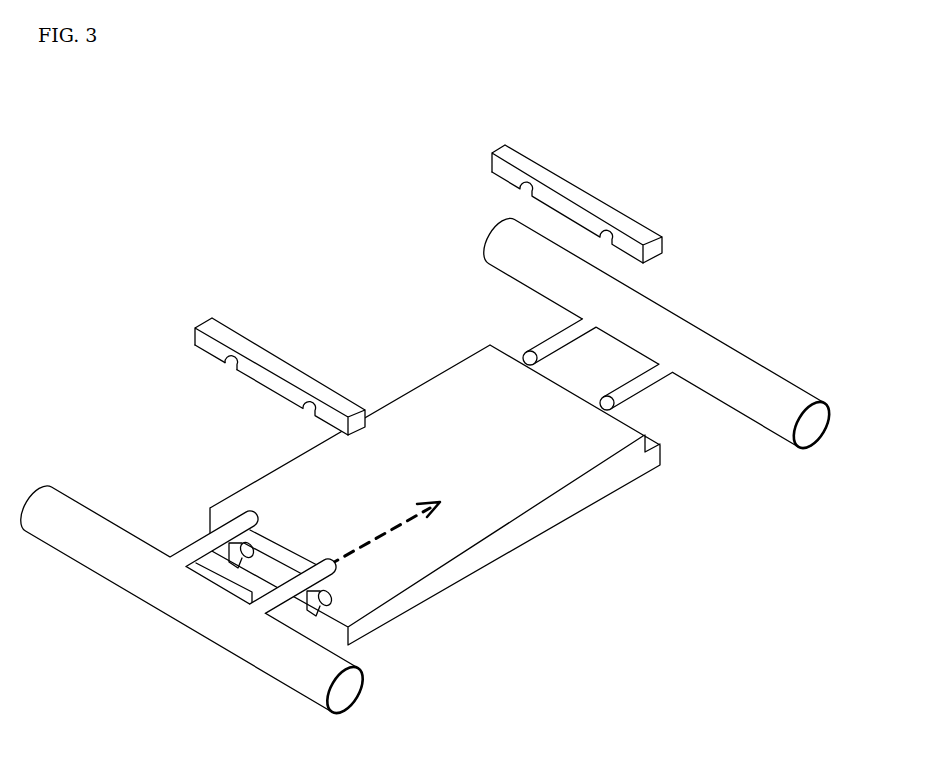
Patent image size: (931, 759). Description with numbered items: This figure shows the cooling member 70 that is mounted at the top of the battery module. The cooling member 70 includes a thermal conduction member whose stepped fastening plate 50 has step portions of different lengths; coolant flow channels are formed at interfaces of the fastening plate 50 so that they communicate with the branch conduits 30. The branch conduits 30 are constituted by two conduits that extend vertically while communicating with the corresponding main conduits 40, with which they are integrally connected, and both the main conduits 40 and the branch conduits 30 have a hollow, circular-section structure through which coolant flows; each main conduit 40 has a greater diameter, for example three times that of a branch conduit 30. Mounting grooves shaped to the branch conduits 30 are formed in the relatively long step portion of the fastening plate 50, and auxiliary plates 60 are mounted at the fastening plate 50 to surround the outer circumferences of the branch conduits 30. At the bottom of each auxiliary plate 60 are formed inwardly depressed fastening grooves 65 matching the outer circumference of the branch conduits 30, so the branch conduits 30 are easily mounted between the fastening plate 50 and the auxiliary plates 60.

The cooling member 70 is at (52, 140).
The auxiliary plate 60 is at (401, 298).
The fastening groove 65 is at (232, 367).
The branch conduit 30 is at (637, 394).
The fastening plate 50 is at (572, 516).
The main conduit 40 is at (98, 572).